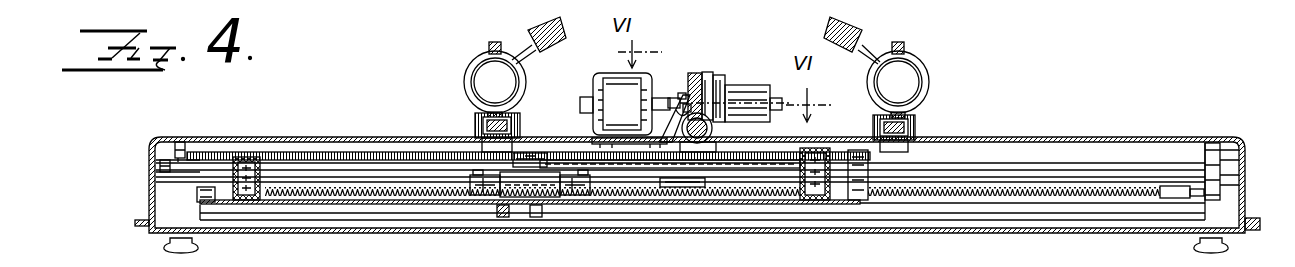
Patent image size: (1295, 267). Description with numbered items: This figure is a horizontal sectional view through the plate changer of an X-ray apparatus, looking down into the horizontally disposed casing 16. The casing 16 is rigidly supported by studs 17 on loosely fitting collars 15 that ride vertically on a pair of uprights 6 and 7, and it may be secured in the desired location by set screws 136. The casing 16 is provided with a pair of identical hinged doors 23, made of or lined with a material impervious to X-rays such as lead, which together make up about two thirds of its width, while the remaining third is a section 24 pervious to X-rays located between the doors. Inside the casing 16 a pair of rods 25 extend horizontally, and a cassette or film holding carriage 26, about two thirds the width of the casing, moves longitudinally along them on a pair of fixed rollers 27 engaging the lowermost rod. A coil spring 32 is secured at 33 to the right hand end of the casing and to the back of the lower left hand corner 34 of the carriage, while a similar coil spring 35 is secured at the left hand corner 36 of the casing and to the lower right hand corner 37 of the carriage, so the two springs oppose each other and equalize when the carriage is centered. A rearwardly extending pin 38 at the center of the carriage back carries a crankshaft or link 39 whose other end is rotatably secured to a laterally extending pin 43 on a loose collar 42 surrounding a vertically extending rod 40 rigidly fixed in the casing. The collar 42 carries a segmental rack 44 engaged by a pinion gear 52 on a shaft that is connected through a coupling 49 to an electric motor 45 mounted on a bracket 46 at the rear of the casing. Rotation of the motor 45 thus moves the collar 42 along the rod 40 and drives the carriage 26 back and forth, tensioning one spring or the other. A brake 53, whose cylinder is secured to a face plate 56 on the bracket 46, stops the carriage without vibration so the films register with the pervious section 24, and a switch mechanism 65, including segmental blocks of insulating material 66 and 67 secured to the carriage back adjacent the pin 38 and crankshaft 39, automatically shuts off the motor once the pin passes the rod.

The upright 6 is at (464, 82).
The upright 7 is at (929, 80).
The sleeve or collar 15 is at (474, 96).
The casing 16 is at (152, 142).
The stud 17 is at (475, 122).
The hinged door 23 is at (318, 233).
The section pervious to X-rays 24 is at (570, 222).
The rod 25 is at (1010, 168).
The cassette or film holding carriage 26 is at (402, 206).
The fixed roller 27 is at (252, 157).
The coil spring 32 is at (912, 198).
The spring securing point 33 is at (1218, 205).
The lower left hand corner of carriage 34 is at (200, 192).
The coil spring 35 is at (392, 152).
The left hand corner of casing 36 is at (180, 142).
The lower right hand corner of carriage 37 is at (858, 150).
The pin 38 is at (528, 152).
The crankshaft or link 39 is at (585, 160).
The vertically extending rod 40 is at (706, 135).
The loose collar 42 is at (712, 124).
The laterally extending pin 43 is at (678, 188).
The segmental rack 44 is at (672, 98).
The electric motor 45 is at (612, 90).
The bracket 46 is at (687, 104).
The coupling 49 is at (682, 93).
The pinion gear 52 is at (693, 73).
The brake 53 is at (750, 78).
The face plate 56 is at (708, 72).
The switch mechanism 65 is at (488, 185).
The segmental block of insulating material 66 is at (510, 185).
The segmental block of insulating material 67 is at (575, 195).
The set screw 136 is at (540, 22).